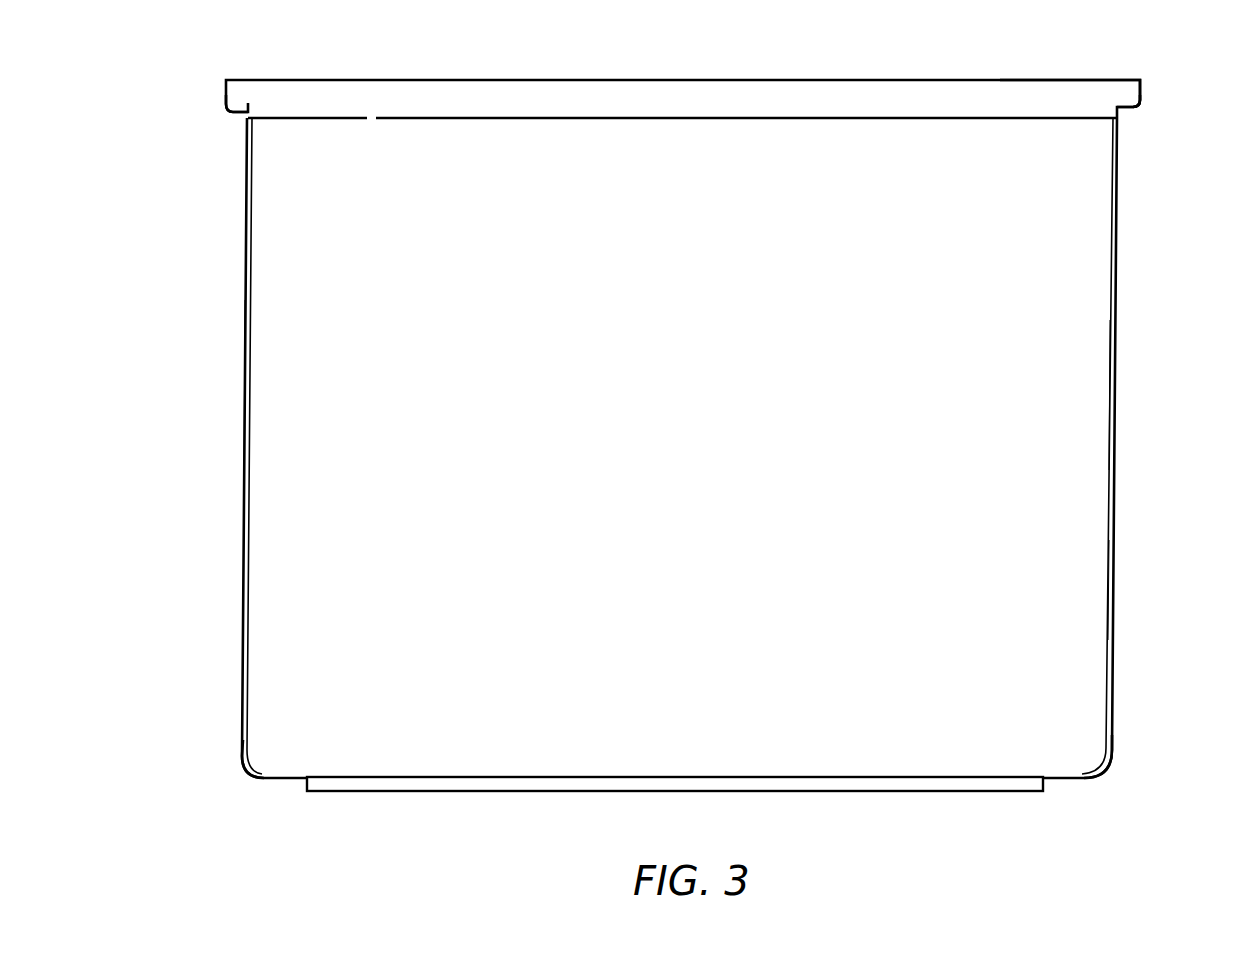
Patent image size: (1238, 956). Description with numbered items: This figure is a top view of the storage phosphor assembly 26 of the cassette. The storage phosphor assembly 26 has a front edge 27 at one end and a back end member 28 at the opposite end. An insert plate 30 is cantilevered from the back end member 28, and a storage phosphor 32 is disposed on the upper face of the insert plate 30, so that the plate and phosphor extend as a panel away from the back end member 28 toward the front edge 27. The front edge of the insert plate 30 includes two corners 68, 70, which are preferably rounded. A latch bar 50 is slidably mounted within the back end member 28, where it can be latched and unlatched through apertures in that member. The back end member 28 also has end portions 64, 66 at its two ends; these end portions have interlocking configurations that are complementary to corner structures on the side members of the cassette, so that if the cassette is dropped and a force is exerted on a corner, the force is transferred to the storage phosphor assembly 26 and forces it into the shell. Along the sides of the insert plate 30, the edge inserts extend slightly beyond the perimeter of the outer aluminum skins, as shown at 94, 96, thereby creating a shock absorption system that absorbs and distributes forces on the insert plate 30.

The storage phosphor assembly 26 is at (1114, 594).
The front edge 27 is at (477, 794).
The back end member 28 is at (570, 80).
The insert plate 30 is at (262, 503).
The storage phosphor 32 is at (1060, 523).
The latch bar 50 is at (1088, 80).
The end portion 64 is at (1129, 96).
The end portion 66 is at (237, 97).
The corner 68 is at (253, 778).
The corner 70 is at (1093, 772).
The edge insert extension 94 is at (246, 393).
The edge insert extension 96 is at (1116, 407).